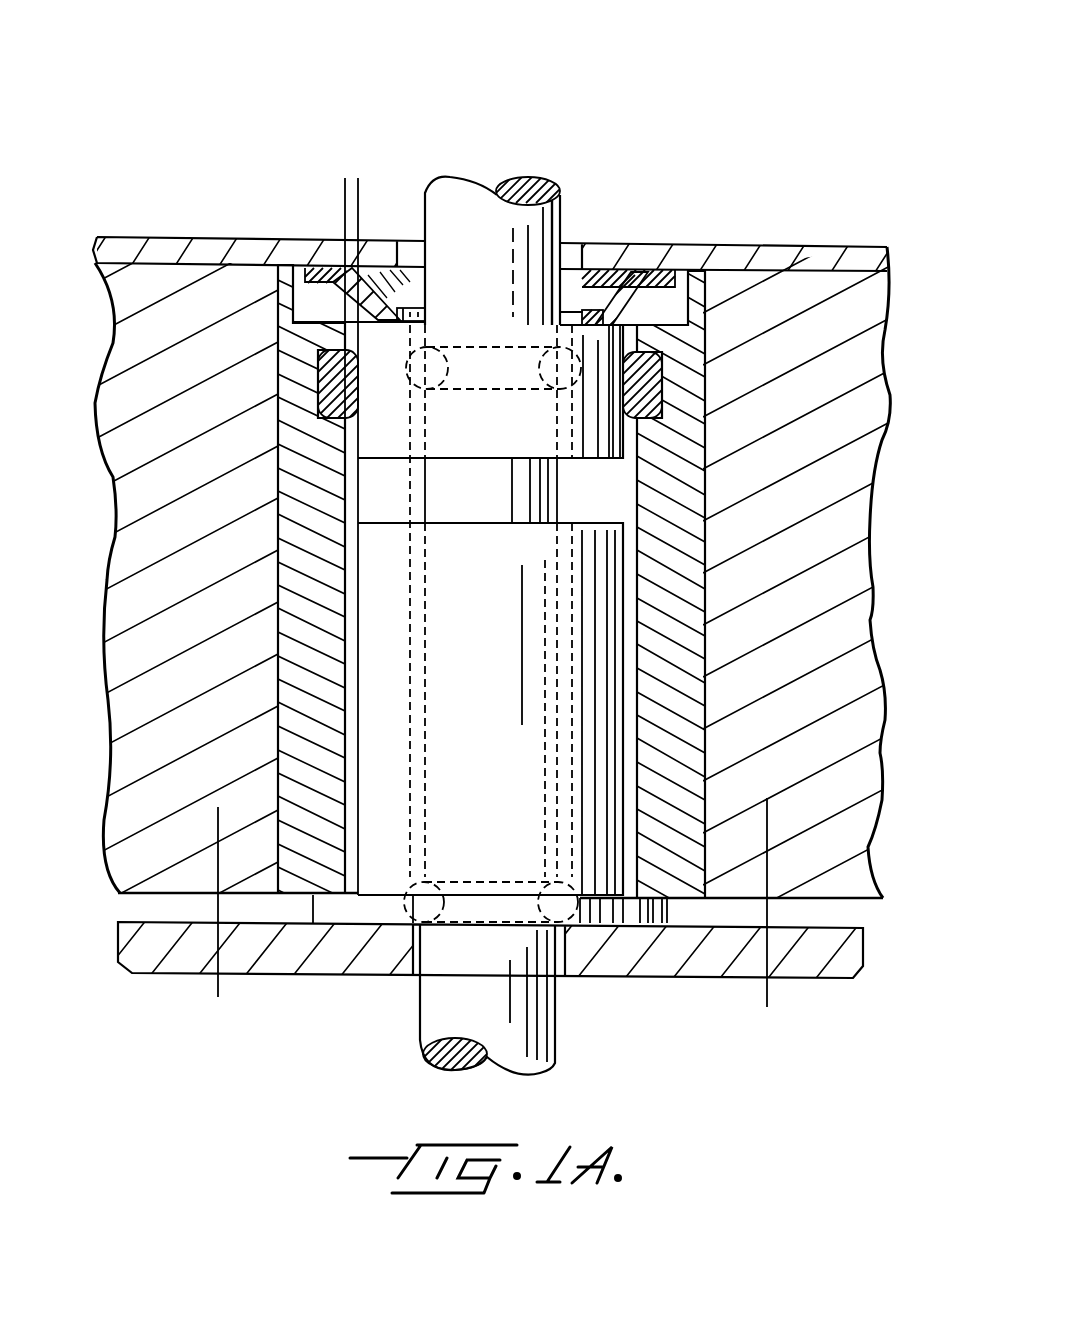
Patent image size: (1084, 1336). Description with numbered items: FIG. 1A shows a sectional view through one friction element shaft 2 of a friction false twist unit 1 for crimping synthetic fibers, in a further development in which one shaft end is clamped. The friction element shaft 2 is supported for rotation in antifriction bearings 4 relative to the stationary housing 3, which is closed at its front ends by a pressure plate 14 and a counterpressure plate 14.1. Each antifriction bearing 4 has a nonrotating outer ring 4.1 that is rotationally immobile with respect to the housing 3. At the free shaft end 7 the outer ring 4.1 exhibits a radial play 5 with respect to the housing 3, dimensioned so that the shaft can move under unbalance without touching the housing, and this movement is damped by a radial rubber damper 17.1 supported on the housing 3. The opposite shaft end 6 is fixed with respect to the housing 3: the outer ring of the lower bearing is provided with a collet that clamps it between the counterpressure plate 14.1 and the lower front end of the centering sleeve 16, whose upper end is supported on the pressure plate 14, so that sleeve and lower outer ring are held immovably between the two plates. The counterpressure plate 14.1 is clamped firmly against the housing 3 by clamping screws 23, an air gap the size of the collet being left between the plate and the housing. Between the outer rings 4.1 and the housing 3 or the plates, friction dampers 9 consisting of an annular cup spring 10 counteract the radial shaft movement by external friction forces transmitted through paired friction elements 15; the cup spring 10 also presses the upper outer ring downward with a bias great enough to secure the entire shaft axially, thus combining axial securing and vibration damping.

The friction false twist unit 1 is at (427, 140).
The friction element shaft 2 is at (522, 226).
The housing 3 is at (840, 613).
The antifriction bearing 4 is at (432, 368).
The outer ring 4.1 is at (585, 452).
The radial play 5 is at (358, 192).
The shaft end 6 is at (358, 1048).
The free shaft end 7 is at (525, 150).
The friction damper 9 is at (328, 299).
The annular cup spring 10 is at (632, 302).
The pressure plate 14 is at (146, 240).
The counterpressure plate 14.1 is at (607, 962).
The friction element 15 is at (627, 323).
The centering sleeve 16 is at (680, 724).
The radial rubber damper 17.1 is at (655, 405).
The clamping screw 23 is at (218, 997).